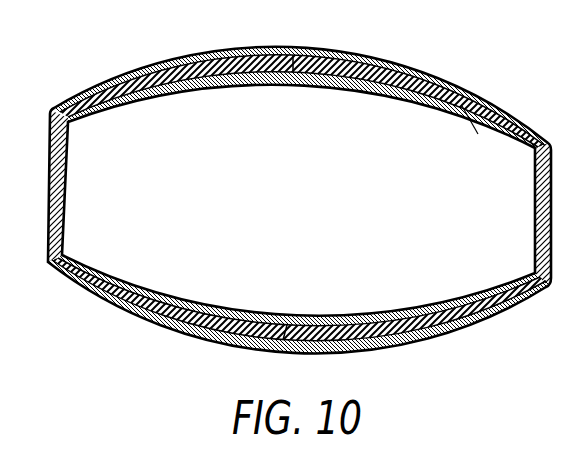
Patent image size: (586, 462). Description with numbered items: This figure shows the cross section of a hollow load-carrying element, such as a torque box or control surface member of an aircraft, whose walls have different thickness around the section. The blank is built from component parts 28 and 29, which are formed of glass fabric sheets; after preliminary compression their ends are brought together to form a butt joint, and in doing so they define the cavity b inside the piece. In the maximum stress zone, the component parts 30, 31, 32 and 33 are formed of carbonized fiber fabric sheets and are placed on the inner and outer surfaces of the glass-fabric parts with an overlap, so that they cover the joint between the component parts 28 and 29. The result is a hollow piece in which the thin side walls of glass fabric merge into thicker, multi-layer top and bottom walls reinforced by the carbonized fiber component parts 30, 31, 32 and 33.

The component part 28 is at (160, 72).
The component part 29 is at (344, 65).
The component part 30 is at (379, 95).
The component part 31 is at (431, 72).
The cavity b is at (469, 137).
The component part 32 is at (363, 325).
The component part 33 is at (398, 344).